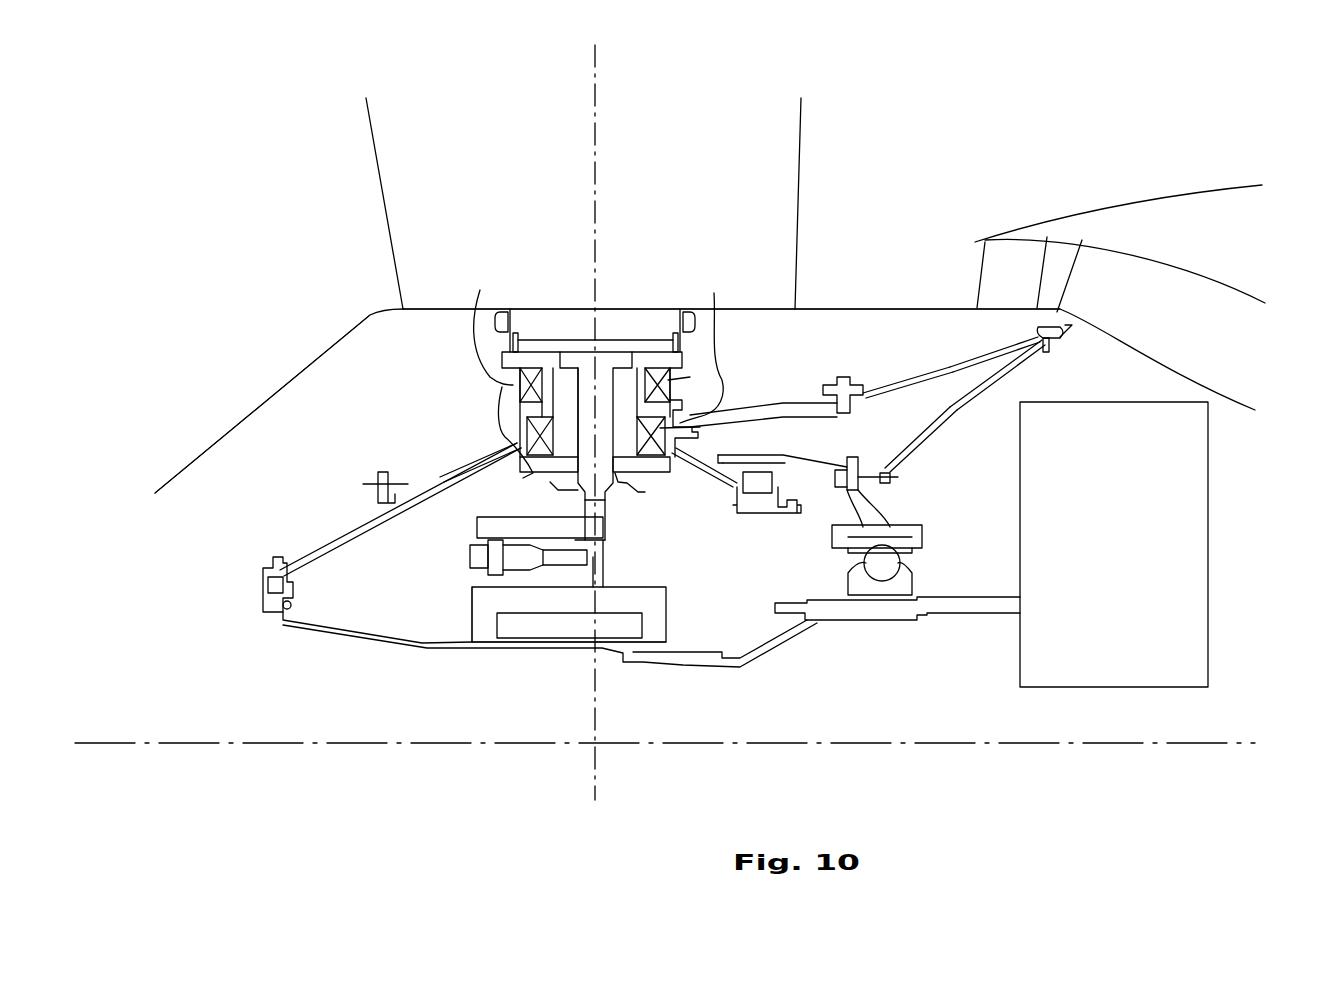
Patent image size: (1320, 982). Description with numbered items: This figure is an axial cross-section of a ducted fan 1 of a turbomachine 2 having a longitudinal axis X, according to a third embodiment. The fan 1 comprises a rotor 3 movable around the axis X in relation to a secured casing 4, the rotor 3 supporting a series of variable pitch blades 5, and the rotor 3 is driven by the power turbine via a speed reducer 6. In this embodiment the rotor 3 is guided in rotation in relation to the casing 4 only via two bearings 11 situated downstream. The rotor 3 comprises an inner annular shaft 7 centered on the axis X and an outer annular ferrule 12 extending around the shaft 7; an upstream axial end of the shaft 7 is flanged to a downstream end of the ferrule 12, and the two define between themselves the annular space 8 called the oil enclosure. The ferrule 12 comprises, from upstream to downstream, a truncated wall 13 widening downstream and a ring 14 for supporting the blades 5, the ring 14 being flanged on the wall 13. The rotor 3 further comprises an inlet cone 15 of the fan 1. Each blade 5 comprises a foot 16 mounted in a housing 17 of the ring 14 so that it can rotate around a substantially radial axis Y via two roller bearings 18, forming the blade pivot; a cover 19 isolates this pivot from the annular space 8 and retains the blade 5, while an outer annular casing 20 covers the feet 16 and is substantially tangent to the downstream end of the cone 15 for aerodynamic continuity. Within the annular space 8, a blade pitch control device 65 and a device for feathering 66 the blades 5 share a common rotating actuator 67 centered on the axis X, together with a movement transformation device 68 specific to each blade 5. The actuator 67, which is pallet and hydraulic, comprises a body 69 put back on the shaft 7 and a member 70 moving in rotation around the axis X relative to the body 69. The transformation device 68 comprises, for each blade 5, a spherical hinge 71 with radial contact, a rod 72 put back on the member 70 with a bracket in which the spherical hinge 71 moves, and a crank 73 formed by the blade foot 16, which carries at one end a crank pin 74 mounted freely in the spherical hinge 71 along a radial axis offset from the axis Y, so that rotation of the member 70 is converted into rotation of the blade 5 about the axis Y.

The ducted fan 1 is at (197, 293).
The turbomachine 2 is at (128, 287).
The rotor 3 is at (290, 548).
The secured casing 4 is at (958, 428).
The variable pitch blade 5 is at (732, 182).
The speed reducer 6 is at (1118, 552).
The inner annular shaft 7 is at (453, 653).
The annular space 8 is at (384, 587).
The bearing 11 is at (790, 482).
The outer annular ferrule 12 is at (318, 530).
The truncated wall 13 is at (365, 513).
The ring 14 is at (581, 371).
The inlet cone 15 is at (215, 435).
The foot 16 is at (550, 367).
The housing 17 is at (613, 367).
The roller bearing 18 is at (674, 380).
The cover 19 is at (515, 440).
The outer annular casing 20 is at (458, 308).
The blade pitch control device 65 is at (657, 573).
The feathering device 66 is at (628, 577).
The common rotating actuator 67 is at (680, 613).
The movement transformation device 68 is at (457, 533).
The body 69 is at (533, 630).
The movable member 70 is at (467, 615).
The spherical hinge 71 is at (473, 557).
The rod 72 is at (555, 557).
The crank 73 is at (517, 522).
The crank pin 74 is at (495, 562).